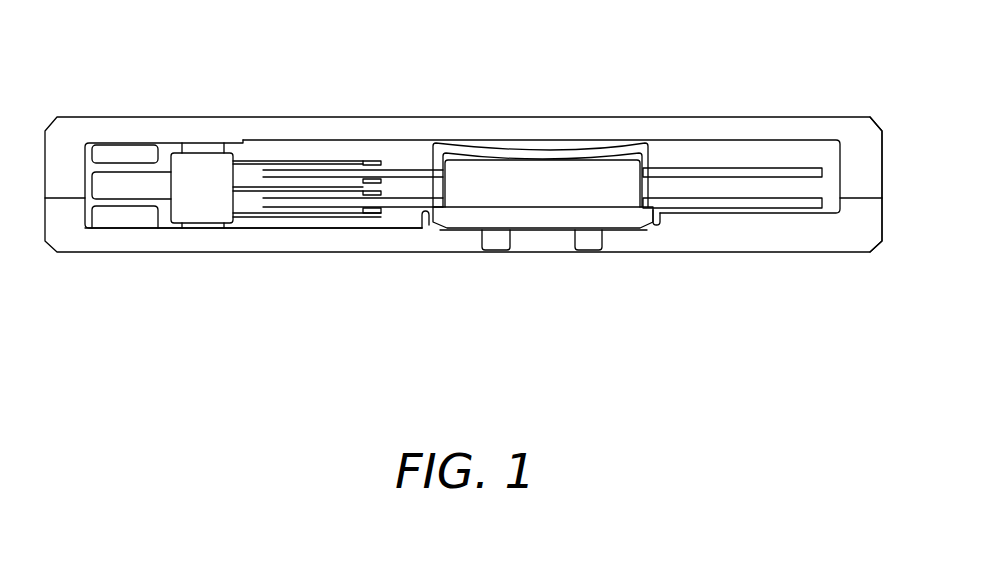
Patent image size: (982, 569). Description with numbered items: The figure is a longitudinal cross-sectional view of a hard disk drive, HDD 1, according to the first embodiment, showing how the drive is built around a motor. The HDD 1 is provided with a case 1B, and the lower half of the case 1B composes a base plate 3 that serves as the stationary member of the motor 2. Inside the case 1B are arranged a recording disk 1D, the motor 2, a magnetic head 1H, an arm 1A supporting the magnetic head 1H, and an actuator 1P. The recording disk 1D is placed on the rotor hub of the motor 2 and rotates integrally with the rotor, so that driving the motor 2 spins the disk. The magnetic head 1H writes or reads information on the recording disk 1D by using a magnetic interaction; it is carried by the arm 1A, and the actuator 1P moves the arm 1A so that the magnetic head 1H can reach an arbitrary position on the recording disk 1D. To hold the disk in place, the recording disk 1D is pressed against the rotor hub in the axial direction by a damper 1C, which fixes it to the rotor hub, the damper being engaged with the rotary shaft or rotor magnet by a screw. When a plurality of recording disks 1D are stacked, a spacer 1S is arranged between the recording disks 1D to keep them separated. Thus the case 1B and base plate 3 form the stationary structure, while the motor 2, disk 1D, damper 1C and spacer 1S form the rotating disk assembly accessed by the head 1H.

The HDD 1 is at (118, 107).
The arm 1A is at (297, 217).
The case 1B is at (860, 225).
The damper 1C is at (560, 152).
The recording disk 1D is at (760, 205).
The magnetic head 1H is at (380, 212).
The actuator 1P is at (146, 186).
The spacer 1S is at (647, 190).
The motor 2 is at (448, 263).
The base plate 3 is at (160, 240).